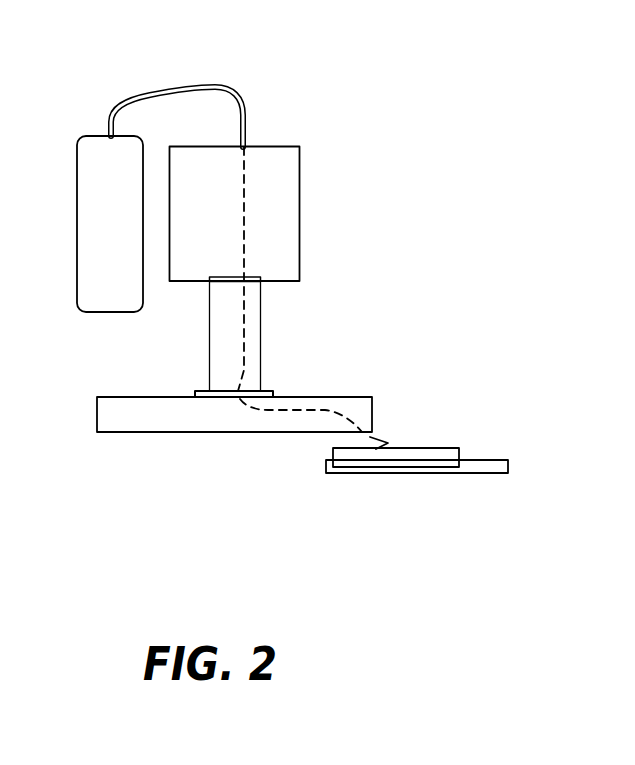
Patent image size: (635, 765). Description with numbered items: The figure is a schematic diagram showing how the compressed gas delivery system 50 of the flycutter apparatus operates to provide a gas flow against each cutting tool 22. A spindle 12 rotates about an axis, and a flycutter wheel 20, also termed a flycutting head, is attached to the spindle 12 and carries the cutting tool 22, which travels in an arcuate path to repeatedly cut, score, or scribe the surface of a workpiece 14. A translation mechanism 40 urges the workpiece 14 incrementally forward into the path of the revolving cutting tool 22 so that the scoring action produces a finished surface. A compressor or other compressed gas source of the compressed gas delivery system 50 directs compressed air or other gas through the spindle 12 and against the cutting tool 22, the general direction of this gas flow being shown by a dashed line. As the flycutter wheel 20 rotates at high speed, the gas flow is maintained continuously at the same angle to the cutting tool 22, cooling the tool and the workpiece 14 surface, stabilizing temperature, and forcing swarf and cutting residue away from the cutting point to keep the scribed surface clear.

The compressed gas delivery system 50 is at (82, 69).
The spindle 12 is at (261, 340).
The flycutter wheel 20 is at (97, 432).
The cutting tool 22 is at (360, 436).
The workpiece 14 is at (433, 448).
The translation mechanism 40 is at (508, 467).